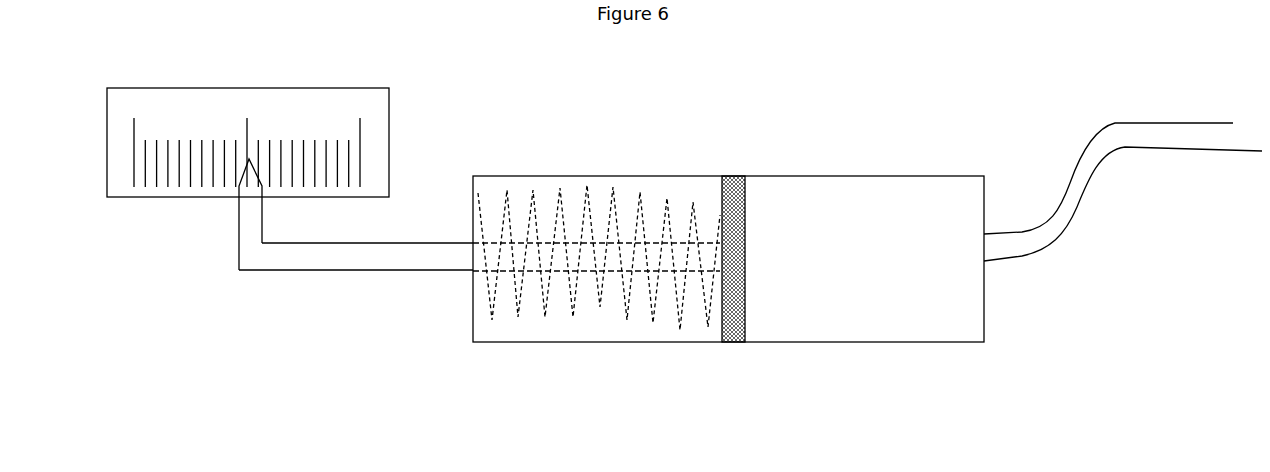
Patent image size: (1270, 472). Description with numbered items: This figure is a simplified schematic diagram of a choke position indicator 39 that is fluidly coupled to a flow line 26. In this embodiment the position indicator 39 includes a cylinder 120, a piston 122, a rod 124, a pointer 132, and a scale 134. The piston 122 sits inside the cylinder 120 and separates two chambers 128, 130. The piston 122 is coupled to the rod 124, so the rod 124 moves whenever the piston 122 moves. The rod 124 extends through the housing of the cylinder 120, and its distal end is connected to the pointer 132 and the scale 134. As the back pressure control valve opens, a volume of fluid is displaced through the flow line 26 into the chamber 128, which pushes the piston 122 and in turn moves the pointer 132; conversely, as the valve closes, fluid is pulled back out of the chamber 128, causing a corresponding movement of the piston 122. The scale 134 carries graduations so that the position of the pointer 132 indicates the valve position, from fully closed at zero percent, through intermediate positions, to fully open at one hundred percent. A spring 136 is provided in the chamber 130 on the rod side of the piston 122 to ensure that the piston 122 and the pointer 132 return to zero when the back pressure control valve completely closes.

The position indicator 39 is at (497, 128).
The scale 134 is at (165, 200).
The pointer 132 is at (236, 262).
The rod 124 is at (342, 273).
The cylinder 120 is at (905, 168).
The chamber 130 is at (538, 245).
The spring 136 is at (490, 300).
The piston 122 is at (745, 198).
The chamber 128 is at (838, 225).
The flow line 26 is at (1158, 146).